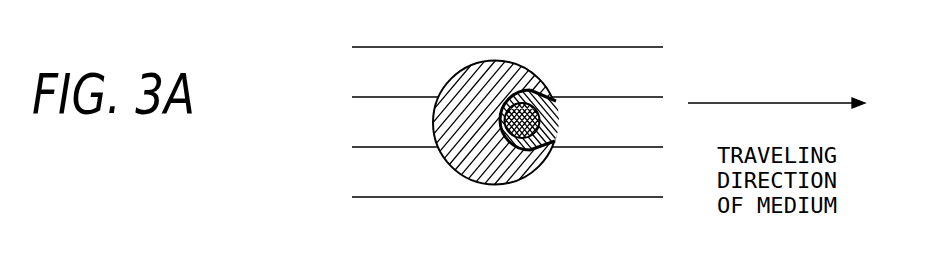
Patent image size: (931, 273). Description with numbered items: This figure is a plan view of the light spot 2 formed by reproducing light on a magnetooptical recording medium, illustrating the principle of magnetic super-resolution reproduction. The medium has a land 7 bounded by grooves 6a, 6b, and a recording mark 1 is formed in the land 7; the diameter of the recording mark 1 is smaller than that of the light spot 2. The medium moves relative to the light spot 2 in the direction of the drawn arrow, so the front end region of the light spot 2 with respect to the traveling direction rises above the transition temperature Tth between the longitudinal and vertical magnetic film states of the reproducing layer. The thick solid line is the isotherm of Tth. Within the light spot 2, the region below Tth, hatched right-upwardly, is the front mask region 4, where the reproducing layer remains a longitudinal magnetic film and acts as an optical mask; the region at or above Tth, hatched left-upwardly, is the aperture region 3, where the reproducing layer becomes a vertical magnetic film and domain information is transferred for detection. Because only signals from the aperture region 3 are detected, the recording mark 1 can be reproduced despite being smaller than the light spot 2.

The recording mark 1 is at (557, 107).
The light spot 2 is at (450, 66).
The aperture region 3 is at (557, 135).
The front mask region 4 is at (476, 172).
The groove 6a is at (363, 89).
The groove 6b is at (360, 167).
The land 7 is at (362, 135).
The transition temperature Tth is at (533, 174).